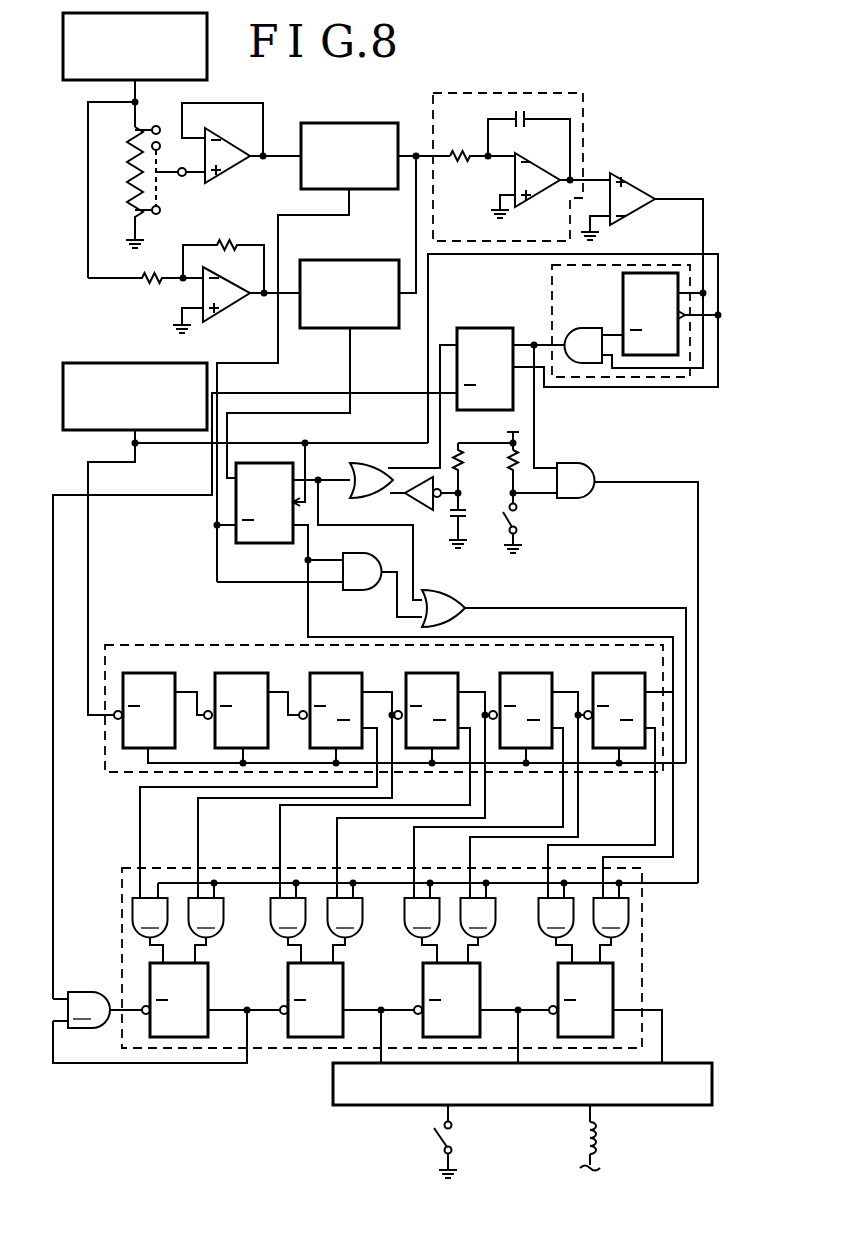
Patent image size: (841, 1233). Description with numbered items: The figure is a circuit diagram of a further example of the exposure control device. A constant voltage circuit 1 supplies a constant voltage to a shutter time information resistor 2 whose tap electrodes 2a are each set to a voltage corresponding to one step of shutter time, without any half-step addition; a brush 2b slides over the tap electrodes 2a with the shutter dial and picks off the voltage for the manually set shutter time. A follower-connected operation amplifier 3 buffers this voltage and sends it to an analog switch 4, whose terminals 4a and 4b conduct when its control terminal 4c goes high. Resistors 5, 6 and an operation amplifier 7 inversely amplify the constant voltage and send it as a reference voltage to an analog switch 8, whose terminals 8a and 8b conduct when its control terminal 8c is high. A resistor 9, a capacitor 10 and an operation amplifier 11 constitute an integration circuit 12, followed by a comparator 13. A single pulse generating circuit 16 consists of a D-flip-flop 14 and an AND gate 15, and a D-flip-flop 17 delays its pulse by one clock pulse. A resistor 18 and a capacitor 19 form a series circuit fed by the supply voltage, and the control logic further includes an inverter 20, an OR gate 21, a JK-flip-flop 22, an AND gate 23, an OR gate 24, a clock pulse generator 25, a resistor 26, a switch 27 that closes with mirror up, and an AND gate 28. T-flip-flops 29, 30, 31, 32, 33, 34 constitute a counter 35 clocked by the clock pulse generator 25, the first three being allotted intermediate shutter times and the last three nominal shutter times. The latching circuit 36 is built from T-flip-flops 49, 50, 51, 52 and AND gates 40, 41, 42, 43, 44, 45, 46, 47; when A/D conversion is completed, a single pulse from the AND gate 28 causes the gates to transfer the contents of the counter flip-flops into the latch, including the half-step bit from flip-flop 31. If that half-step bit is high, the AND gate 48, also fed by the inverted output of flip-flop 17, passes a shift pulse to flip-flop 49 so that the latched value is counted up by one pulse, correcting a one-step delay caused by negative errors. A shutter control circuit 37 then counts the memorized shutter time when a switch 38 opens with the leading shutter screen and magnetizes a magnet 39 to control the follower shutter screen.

The constant voltage circuit 1 is at (207, 30).
The shutter time information resistor 2 is at (135, 195).
The tap electrodes 2a is at (152, 130).
The brush 2b is at (176, 180).
The operation amplifier 3 is at (235, 165).
The analog switch 4 is at (318, 123).
The terminal 4a is at (301, 150).
The terminal 4b is at (398, 150).
The control terminal 4c is at (349, 200).
The resistor 5 is at (155, 285).
The resistor 6 is at (232, 240).
The operation amplifier 7 is at (232, 305).
The analog switch 8 is at (375, 328).
The terminal 8a is at (300, 285).
The terminal 8b is at (399, 295).
The control terminal 8c is at (345, 330).
The resistor 9 is at (462, 132).
The capacitor 10 is at (525, 125).
The operation amplifier 11 is at (538, 196).
The integration circuit 12 is at (440, 93).
The comparator 13 is at (622, 180).
The D-flip-flop 14 is at (623, 296).
The AND gate 15 is at (576, 328).
The single pulse generating circuit 16 is at (635, 378).
The D-flip-flop 17 is at (487, 328).
The resistor 18 is at (462, 460).
The capacitor 19 is at (466, 515).
The inverter 20 is at (427, 512).
The OR gate 21 is at (350, 490).
The JK-flip-flop 22 is at (245, 545).
The AND gate 23 is at (360, 592).
The OR gate 24 is at (458, 598).
The clock pulse generator 25 is at (85, 363).
The resistor 26 is at (507, 462).
The switch 27 is at (519, 518).
The AND gate 28 is at (590, 475).
The T-flip-flop 29 is at (400, 704).
The T-flip-flop 30 is at (251, 706).
The T-flip-flop 31 is at (268, 772).
The T-flip-flop 32 is at (384, 772).
The T-flip-flop 33 is at (499, 772).
The T-flip-flop 34 is at (610, 772).
The counter 35 is at (150, 645).
The latching circuit 36 is at (660, 896).
The shutter control circuit 37 is at (333, 1085).
The switch 38 is at (452, 1137).
The magnet 39 is at (582, 1140).
The AND gate 40 is at (150, 923).
The AND gate 41 is at (206, 922).
The AND gate 42 is at (288, 922).
The AND gate 43 is at (345, 922).
The AND gate 44 is at (422, 922).
The AND gate 45 is at (478, 922).
The AND gate 46 is at (556, 922).
The AND gate 47 is at (611, 922).
The AND gate 48 is at (150, 1027).
The T-flip-flop 49 is at (208, 980).
The T-flip-flop 50 is at (343, 980).
The T-flip-flop 51 is at (480, 980).
The T-flip-flop 52 is at (613, 978).